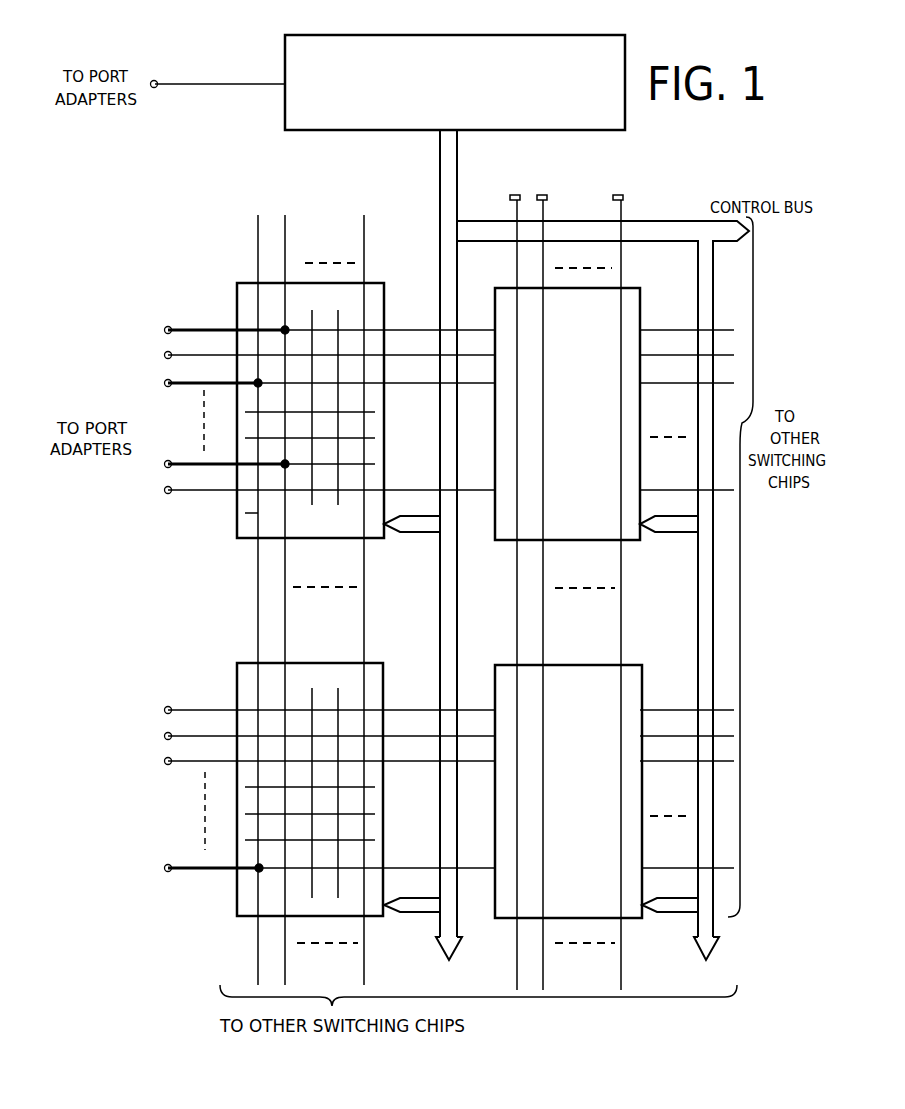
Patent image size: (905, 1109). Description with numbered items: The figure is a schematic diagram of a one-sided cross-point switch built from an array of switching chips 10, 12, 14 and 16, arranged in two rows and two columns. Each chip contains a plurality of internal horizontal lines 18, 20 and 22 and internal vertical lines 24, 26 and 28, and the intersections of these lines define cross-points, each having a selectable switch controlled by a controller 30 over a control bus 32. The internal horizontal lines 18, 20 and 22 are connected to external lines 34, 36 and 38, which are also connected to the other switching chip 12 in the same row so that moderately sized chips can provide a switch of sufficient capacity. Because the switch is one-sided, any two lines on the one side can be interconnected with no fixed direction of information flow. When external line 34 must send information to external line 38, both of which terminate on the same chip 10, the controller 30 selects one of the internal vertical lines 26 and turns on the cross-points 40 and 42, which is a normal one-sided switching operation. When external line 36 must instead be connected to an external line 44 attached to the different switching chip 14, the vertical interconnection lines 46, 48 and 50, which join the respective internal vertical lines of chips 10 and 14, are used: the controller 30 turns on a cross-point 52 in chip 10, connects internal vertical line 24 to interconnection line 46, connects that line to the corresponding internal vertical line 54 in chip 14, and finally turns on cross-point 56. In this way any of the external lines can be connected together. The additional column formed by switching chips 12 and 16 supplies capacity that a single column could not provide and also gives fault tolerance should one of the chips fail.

The switching chip 10 is at (247, 282).
The switching chip 12 is at (578, 409).
The switching chip 14 is at (237, 682).
The switching chip 16 is at (578, 797).
The internal horizontal line 18 is at (371, 330).
The internal horizontal line 20 is at (372, 383).
The internal horizontal line 22 is at (372, 462).
The internal vertical line 24 is at (258, 330).
The internal vertical line 26 is at (300, 545).
The internal vertical line 28 is at (364, 505).
The controller 30 is at (560, 40).
The control bus 32 is at (460, 183).
The external line 34 is at (213, 325).
The external line 36 is at (190, 383).
The external line 38 is at (184, 458).
The cross-point 40 is at (288, 328).
The cross-point 42 is at (288, 470).
The external line 44 is at (188, 880).
The vertical interconnection line 46 is at (258, 561).
The vertical interconnection line 48 is at (287, 630).
The vertical interconnection line 50 is at (367, 638).
The cross-point 52 is at (248, 394).
The internal vertical line 54 is at (261, 878).
The cross-point 56 is at (254, 877).